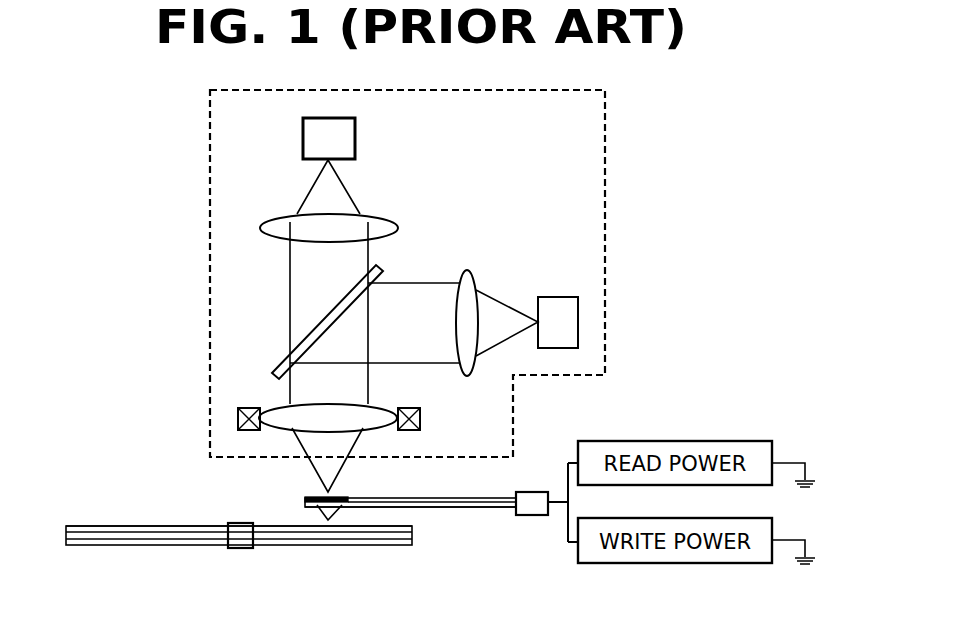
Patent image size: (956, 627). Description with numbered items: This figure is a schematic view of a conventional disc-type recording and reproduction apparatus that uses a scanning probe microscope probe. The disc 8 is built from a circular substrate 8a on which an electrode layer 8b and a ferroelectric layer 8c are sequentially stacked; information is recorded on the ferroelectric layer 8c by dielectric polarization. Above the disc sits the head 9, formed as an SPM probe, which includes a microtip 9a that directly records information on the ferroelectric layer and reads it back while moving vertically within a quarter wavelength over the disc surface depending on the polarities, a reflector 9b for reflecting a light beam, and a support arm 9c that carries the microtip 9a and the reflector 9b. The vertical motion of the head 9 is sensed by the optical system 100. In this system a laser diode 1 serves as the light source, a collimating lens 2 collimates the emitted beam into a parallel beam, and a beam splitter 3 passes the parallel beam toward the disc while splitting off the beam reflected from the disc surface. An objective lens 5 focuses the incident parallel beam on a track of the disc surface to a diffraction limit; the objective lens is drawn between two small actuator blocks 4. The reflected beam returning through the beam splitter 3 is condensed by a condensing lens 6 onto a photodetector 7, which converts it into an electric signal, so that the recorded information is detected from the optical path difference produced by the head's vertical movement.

The optical system 100 is at (209, 138).
The laser diode 1 is at (356, 137).
The collimating lens 2 is at (396, 216).
The beam splitter 3 is at (382, 266).
The actuator 4 is at (243, 408).
The objective lens 5 is at (382, 405).
The condensing lens 6 is at (468, 272).
The photodetector 7 is at (558, 296).
The disc 8 is at (276, 563).
The circular substrate 8a is at (239, 562).
The electrode layer 8b is at (405, 543).
The ferroelectric layer 8c is at (413, 529).
The head 9 is at (398, 501).
The microtip 9a is at (318, 507).
The reflector 9b is at (320, 498).
The support arm 9c is at (306, 502).